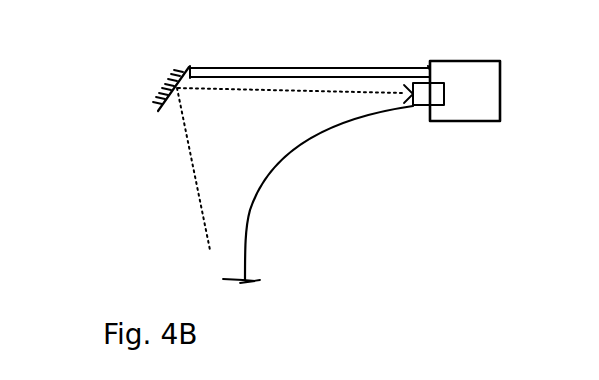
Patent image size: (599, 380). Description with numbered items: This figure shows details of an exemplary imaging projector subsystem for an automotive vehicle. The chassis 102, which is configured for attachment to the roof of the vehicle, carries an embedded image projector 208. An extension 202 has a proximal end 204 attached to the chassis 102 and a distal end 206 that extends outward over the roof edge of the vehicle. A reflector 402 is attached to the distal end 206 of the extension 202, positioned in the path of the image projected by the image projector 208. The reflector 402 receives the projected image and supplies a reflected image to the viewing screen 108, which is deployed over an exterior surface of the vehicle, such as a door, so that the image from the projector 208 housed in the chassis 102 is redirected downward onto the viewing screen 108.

The chassis 102 is at (490, 102).
The viewing screen 108 is at (249, 213).
The extension 202 is at (268, 61).
The proximal end 204 is at (431, 64).
The distal end 206 is at (198, 65).
The image projector 208 is at (426, 107).
The reflector 402 is at (168, 82).